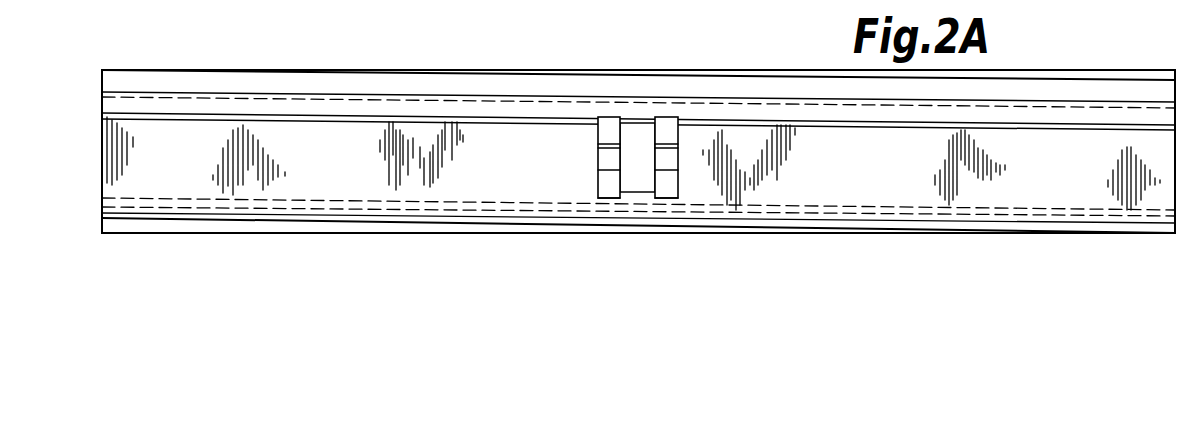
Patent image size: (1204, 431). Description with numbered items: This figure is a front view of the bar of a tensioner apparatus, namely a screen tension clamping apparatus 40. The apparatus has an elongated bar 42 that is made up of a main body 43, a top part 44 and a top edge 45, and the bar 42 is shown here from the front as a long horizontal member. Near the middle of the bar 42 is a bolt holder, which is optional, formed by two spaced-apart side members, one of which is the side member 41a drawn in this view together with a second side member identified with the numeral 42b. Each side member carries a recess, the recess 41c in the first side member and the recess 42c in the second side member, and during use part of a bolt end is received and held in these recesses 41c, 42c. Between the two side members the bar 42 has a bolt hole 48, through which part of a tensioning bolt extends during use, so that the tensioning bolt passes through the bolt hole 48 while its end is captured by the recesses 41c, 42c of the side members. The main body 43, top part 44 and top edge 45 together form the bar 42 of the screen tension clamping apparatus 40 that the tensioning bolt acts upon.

The screen tension clamping apparatus 40 is at (220, 225).
The side member 41a is at (606, 185).
The recess 41c is at (608, 158).
The bar 42 is at (943, 229).
The second clip lower portion 42b is at (660, 185).
The recess 42c is at (664, 157).
The main body 43 is at (860, 187).
The top part 44 is at (320, 93).
The top edge 45 is at (1060, 90).
The bolt hole 48 is at (636, 170).